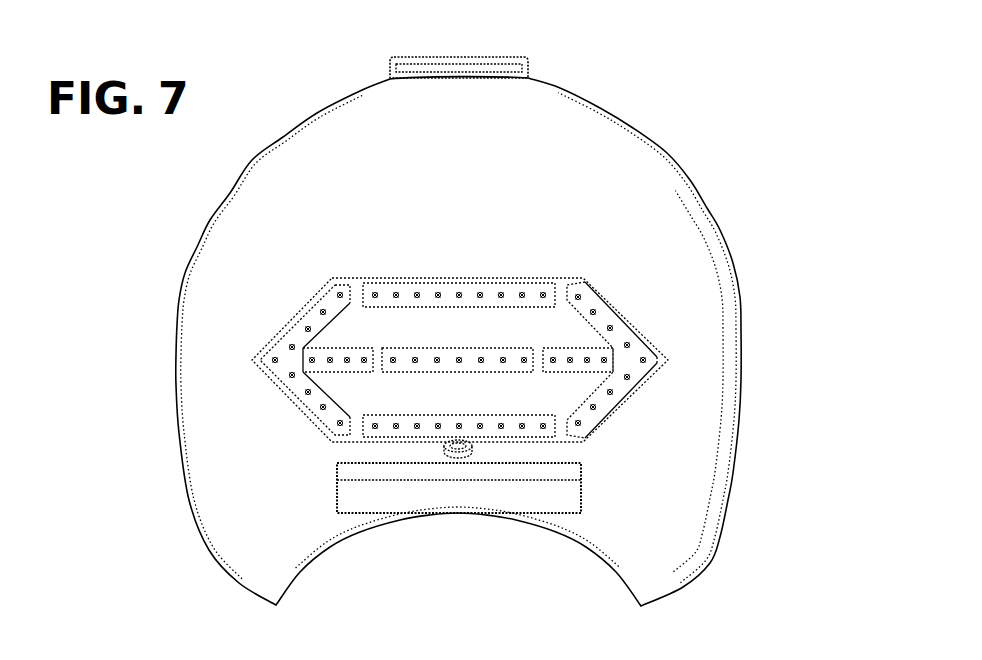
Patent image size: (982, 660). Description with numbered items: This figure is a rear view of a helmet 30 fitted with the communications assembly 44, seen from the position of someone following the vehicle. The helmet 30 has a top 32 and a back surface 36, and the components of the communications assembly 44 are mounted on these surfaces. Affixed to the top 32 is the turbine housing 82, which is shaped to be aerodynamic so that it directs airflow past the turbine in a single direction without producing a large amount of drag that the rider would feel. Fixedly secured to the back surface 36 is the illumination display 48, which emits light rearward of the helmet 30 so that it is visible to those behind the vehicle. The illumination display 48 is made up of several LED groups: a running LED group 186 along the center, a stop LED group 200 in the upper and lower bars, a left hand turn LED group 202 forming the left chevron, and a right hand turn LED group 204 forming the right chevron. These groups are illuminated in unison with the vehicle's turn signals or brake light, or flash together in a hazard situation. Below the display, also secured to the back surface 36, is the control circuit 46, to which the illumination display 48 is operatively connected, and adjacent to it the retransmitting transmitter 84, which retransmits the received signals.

The helmet 30 is at (455, 319).
The top 32 is at (368, 88).
The back surface 36 is at (471, 138).
The communications assembly 44 is at (218, 409).
The control circuit 46 is at (542, 495).
The illumination display 48 is at (322, 280).
The turbine housing 82 is at (510, 57).
The retransmitting transmitter 84 is at (457, 458).
The running LED group 186 is at (477, 348).
The stop LED group 200 is at (440, 424).
The left hand turn LED group 202 is at (298, 337).
The right hand turn LED group 204 is at (613, 345).